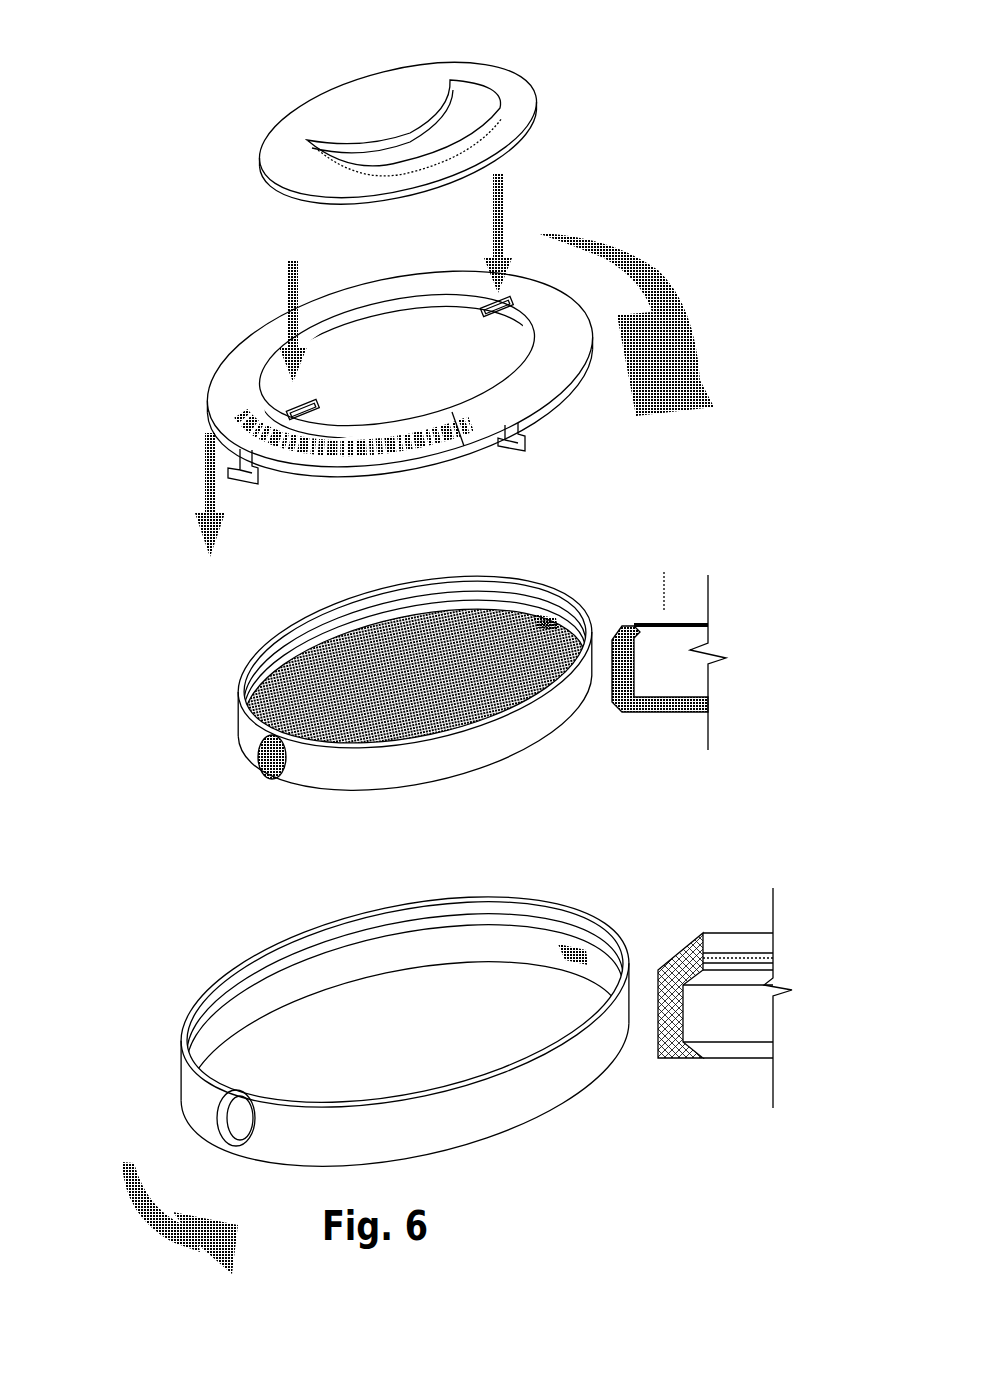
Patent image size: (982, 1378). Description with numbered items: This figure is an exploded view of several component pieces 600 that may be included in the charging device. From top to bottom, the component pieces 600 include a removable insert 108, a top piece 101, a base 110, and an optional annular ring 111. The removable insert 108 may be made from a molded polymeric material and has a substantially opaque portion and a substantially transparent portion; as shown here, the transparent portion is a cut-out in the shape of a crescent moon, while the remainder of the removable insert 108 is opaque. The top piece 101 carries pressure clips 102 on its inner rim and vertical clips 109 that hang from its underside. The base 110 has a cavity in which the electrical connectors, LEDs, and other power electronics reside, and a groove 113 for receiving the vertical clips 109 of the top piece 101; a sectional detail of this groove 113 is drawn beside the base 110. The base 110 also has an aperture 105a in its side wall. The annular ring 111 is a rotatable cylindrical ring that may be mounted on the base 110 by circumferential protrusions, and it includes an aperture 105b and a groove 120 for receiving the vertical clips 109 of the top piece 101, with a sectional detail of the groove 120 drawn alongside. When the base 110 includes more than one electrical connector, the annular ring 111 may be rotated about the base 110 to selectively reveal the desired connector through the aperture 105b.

The component pieces 600 is at (728, 88).
The removable insert 108 is at (285, 98).
The top piece 101 is at (235, 325).
The pressure clips 102 is at (483, 297).
The vertical clips 109 is at (230, 449).
The base 110 is at (583, 625).
The groove 113 is at (636, 644).
The aperture 105a is at (272, 758).
The aperture 105b is at (240, 1125).
The annular ring 111 is at (678, 947).
The groove 120 is at (698, 959).